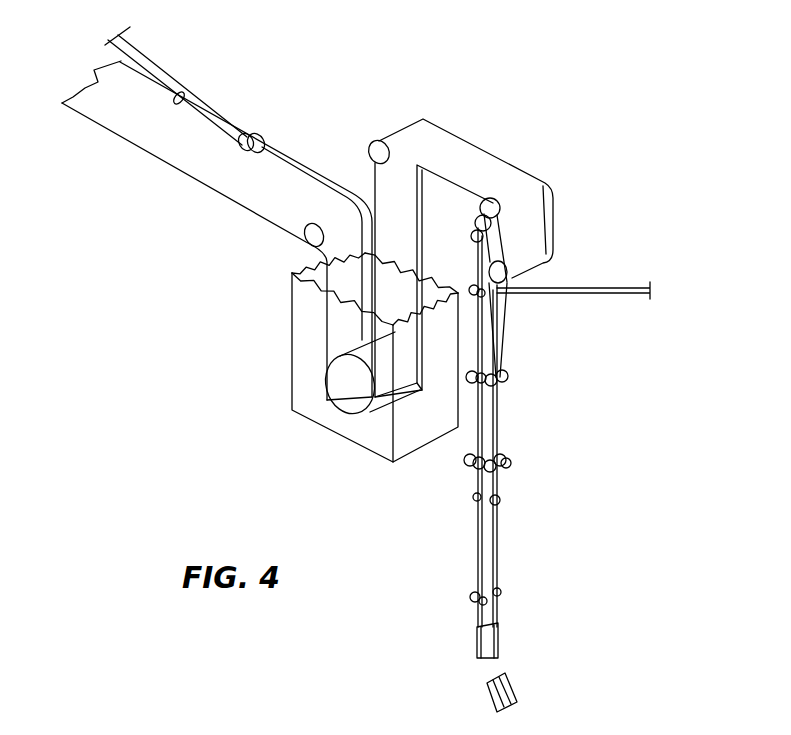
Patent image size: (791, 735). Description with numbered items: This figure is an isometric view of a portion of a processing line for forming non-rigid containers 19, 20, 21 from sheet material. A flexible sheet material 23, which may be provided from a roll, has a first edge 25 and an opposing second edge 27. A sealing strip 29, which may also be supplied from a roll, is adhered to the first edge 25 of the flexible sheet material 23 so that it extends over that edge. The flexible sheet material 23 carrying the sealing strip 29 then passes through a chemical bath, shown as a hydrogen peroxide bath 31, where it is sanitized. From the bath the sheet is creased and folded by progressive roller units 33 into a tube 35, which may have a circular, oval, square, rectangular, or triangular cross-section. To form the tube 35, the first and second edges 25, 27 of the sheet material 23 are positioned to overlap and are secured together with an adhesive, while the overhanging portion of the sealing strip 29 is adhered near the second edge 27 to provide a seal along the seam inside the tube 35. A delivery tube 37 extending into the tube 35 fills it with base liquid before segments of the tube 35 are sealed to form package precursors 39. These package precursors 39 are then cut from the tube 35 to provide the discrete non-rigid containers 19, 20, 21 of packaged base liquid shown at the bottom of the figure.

The non-rigid container 19 is at (608, 686).
The non-rigid container 20 is at (608, 686).
The non-rigid container 21 is at (512, 680).
The flexible sheet material 23 is at (112, 123).
The first edge 25 is at (148, 93).
The second edge 27 is at (167, 127).
The sealing strip 29 is at (232, 130).
The hydrogen peroxide bath 31 is at (303, 357).
The progressive roller units 33 is at (508, 318).
The tube 35 is at (500, 545).
The delivery tube 37 is at (608, 288).
The package precursors 39 is at (504, 642).